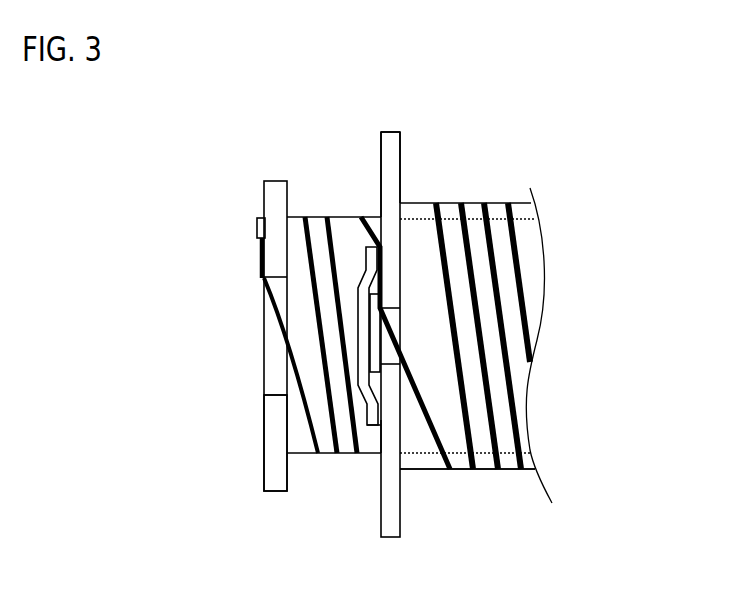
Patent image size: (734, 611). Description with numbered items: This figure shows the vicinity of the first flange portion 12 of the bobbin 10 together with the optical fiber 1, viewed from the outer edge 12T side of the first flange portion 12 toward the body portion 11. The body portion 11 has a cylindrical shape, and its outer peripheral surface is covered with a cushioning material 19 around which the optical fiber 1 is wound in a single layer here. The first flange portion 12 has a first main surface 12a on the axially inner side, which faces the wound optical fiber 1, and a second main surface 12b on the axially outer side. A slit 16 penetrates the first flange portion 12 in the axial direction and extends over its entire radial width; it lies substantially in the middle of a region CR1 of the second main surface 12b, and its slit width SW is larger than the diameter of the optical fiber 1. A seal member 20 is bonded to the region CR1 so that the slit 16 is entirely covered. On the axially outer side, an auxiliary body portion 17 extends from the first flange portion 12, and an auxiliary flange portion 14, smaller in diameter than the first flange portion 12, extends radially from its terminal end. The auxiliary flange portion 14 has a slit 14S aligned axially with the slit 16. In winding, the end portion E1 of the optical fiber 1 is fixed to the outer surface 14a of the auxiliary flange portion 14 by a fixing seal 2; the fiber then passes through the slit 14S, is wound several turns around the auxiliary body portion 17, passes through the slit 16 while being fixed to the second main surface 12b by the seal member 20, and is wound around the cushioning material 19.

The bobbin 10 is at (250, 138).
The optical fiber 1 is at (518, 268).
The body portion 11 is at (477, 217).
The fixing seal 2 is at (257, 227).
The end portion E1 is at (260, 248).
The auxiliary flange portion 14 is at (278, 470).
The outer surface 14a is at (265, 413).
The slit 14S is at (277, 338).
The auxiliary body portion 17 is at (308, 447).
The seal member 20 is at (360, 263).
The first flange portion 12 is at (390, 538).
The outer edge 12T is at (388, 132).
The first main surface 12a is at (401, 140).
The second main surface 12b is at (381, 158).
The slit 16 is at (390, 318).
The slit width SW is at (415, 308).
The region CR1 is at (379, 437).
The cushioning material 19 is at (422, 465).